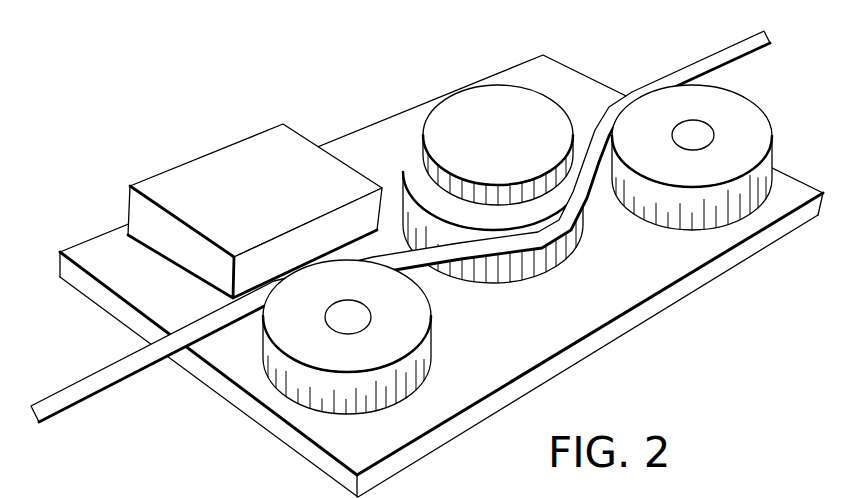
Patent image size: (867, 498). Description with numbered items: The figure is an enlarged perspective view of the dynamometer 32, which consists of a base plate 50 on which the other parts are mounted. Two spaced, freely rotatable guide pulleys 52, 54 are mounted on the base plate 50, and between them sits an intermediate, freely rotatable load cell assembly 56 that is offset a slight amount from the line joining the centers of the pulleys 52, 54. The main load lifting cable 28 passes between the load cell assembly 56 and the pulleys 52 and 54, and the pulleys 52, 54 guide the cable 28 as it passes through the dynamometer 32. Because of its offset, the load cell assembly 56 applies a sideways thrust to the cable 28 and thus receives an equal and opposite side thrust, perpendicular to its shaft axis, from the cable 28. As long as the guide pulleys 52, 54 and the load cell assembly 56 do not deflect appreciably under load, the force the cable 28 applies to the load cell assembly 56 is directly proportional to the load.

The main load lifting cable 28 is at (712, 58).
The dynamometer 32 is at (355, 152).
The base plate 50 is at (577, 332).
The guide pulley 52 is at (350, 362).
The guide pulley 54 is at (744, 140).
The load cell assembly 56 is at (456, 126).